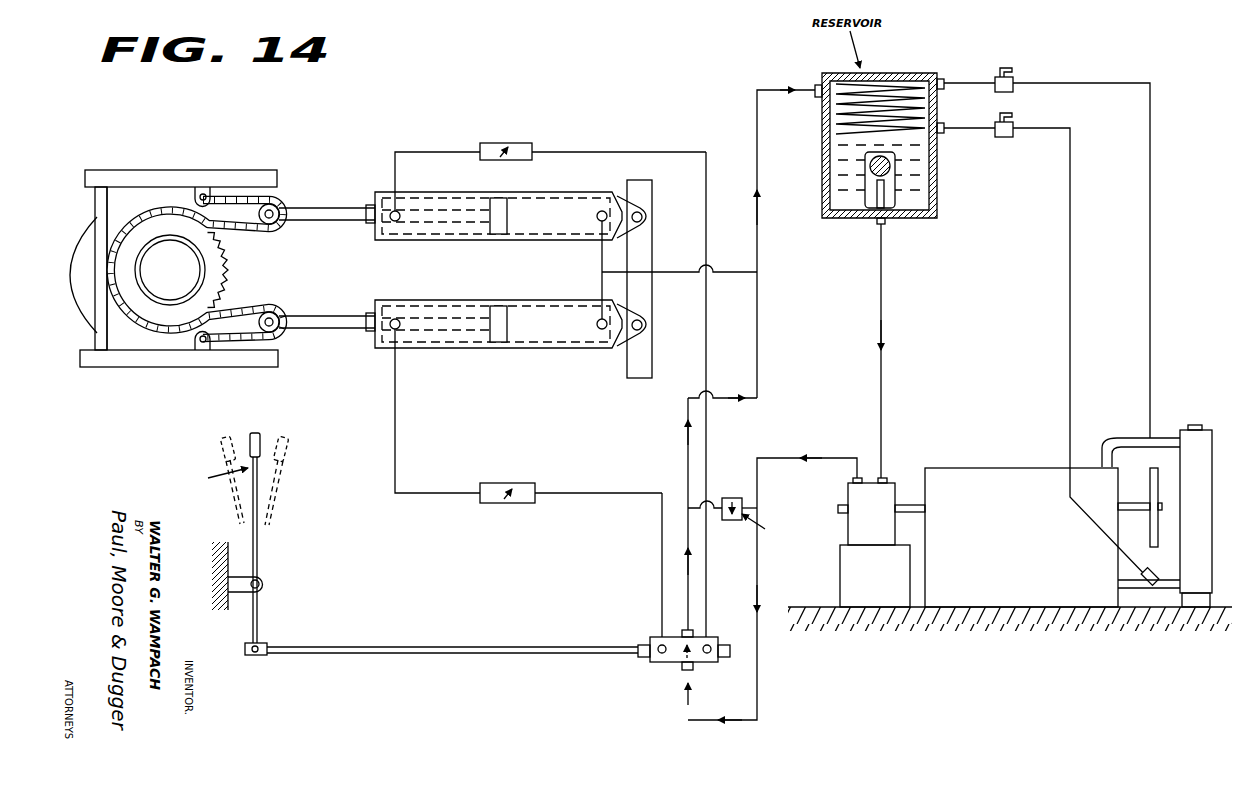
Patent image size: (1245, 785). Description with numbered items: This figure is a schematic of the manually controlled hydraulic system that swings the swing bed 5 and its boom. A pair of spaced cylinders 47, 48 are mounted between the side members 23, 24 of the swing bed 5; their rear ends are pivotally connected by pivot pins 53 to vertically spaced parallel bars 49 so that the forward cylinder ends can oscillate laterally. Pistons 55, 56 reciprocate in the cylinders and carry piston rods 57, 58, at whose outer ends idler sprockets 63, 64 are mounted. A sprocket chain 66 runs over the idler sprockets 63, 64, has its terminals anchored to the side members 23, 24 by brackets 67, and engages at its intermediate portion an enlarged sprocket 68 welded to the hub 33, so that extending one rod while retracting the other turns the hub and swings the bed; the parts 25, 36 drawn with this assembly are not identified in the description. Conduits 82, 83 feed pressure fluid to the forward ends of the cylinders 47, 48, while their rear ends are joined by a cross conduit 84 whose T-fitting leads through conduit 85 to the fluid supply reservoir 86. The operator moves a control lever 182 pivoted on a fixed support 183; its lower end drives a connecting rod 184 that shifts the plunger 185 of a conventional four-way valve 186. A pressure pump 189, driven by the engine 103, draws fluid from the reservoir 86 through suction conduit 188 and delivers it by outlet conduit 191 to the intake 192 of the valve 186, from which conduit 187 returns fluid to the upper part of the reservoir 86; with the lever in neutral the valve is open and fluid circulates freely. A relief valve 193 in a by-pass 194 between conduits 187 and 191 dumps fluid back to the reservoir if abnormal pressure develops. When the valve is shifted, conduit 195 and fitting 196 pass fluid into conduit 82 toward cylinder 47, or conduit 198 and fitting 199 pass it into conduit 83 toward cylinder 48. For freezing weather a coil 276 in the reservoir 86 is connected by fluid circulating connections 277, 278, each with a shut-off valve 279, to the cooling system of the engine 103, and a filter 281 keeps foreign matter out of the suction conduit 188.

The swing bed 5 is at (176, 166).
The side member 23 is at (255, 171).
The side member 24 is at (158, 366).
The arcuate guard 25 is at (95, 222).
The hub 33 is at (149, 247).
The housing plate 36 is at (130, 340).
The cylinder 47 is at (498, 324).
The cylinder 48 is at (498, 216).
The parallel bars 49 is at (645, 359).
The pivot pins 53 is at (645, 219).
The piston 55 is at (489, 331).
The piston 56 is at (489, 226).
The piston rod 57 is at (346, 316).
The piston rod 58 is at (337, 207).
The idler sprocket 63 is at (268, 312).
The idler sprocket 64 is at (264, 227).
The sprocket chain 66 is at (230, 316).
The brackets 67 is at (195, 196).
The enlarged sprocket 68 is at (226, 268).
The conduit 82 is at (396, 420).
The conduit 83 is at (390, 166).
The cross conduit 84 is at (600, 259).
The conduit 85 is at (676, 272).
The fluid supply reservoir 86 is at (940, 184).
The engine 103 is at (1010, 528).
The control lever 182 is at (235, 438).
The fixed support 183 is at (262, 582).
The connecting rod 184 is at (417, 646).
The plunger 185 is at (648, 642).
The four-way valve 186 is at (652, 666).
The conduit 187 is at (774, 90).
The conduit 188 is at (882, 310).
The pressure pump 189 is at (882, 497).
The outlet conduit 191 is at (832, 458).
The intake 192 is at (697, 671).
The relief valve 193 is at (731, 498).
The by-pass 194 is at (688, 528).
The conduit 195 is at (662, 528).
The fitting 196 is at (505, 498).
The conduit 198 is at (653, 153).
The fitting 199 is at (502, 157).
The coil 276 is at (905, 80).
The fluid circulating connection 277 is at (1150, 254).
The fluid circulating connection 278 is at (1070, 277).
The shut-off valves 279 is at (1014, 90).
The filter 281 is at (868, 190).